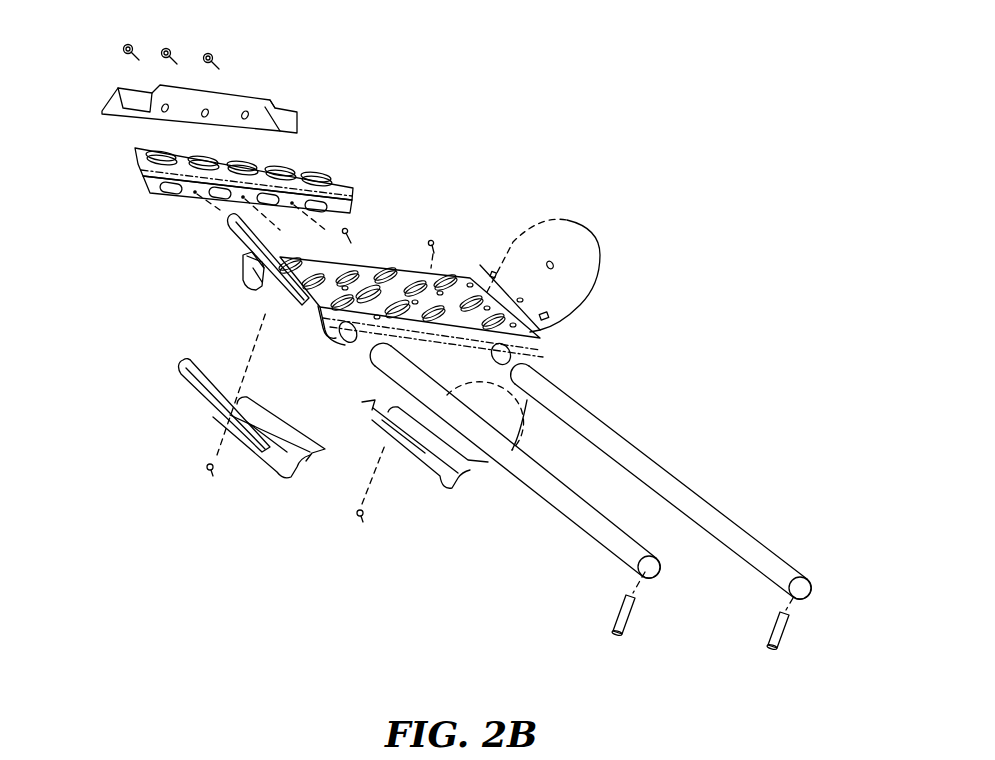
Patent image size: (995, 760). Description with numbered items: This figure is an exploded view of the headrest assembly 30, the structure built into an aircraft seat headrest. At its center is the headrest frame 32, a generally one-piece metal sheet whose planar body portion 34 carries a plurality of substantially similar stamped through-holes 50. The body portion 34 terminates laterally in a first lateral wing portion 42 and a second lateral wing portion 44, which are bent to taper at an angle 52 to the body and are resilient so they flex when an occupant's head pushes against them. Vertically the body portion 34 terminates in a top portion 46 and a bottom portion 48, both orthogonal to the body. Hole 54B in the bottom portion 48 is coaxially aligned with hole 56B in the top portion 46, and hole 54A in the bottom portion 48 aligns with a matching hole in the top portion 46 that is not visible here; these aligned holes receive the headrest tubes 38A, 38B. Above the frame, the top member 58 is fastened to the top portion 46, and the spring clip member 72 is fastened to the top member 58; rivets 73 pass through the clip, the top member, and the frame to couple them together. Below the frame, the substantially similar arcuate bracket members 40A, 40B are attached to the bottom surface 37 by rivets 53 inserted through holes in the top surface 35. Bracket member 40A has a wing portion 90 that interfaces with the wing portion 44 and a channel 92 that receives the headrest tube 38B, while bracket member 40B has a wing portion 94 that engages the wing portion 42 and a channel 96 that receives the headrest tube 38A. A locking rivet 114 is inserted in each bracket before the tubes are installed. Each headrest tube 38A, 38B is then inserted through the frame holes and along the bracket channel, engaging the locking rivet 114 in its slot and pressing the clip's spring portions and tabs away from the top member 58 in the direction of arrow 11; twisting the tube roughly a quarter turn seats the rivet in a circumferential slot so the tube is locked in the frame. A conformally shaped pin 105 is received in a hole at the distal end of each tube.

The arrow 11 is at (737, 239).
The headrest assembly 30 is at (634, 126).
The headrest frame 32 is at (546, 318).
The body portion 34 is at (434, 275).
The top surface 35 is at (397, 303).
The bottom surface 37 is at (270, 313).
The headrest tube 38A is at (745, 547).
The headrest tube 38B is at (597, 530).
The bracket member 40A is at (513, 402).
The bracket member 40B is at (203, 390).
The first lateral wing portion 42 is at (570, 247).
The second lateral wing portion 44 is at (263, 262).
The top portion 46 is at (263, 288).
The bottom portion 48 is at (333, 330).
The through-holes 50 is at (387, 273).
The angle 52 is at (313, 262).
The rivets 53 is at (352, 228).
The hole 54A is at (510, 353).
The hole 54B is at (348, 336).
The hole 56B is at (262, 275).
The top member 58 is at (313, 173).
The spring clip member 72 is at (230, 97).
The rivets 73 is at (125, 44).
The wing portion 90 is at (207, 470).
The channel 92 is at (303, 463).
The wing portion 94 is at (517, 415).
The channel 96 is at (446, 481).
The pin 105 is at (612, 610).
The locking rivet 114 is at (213, 472).